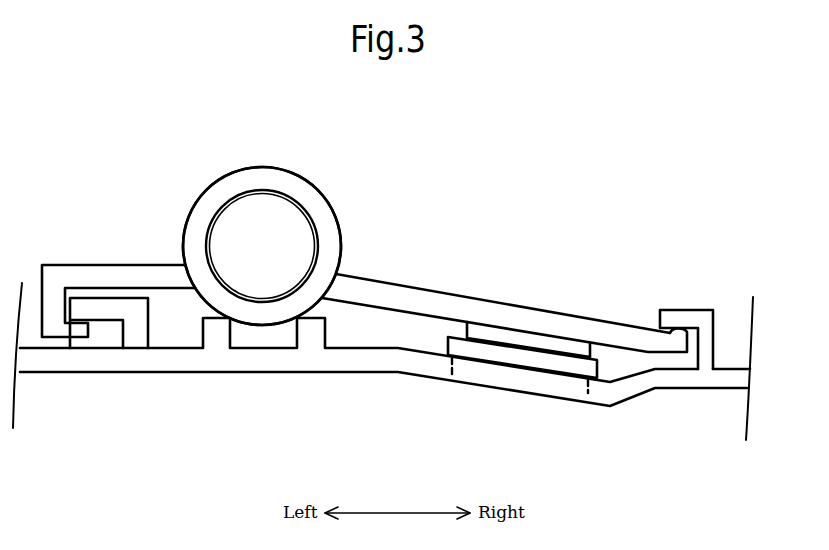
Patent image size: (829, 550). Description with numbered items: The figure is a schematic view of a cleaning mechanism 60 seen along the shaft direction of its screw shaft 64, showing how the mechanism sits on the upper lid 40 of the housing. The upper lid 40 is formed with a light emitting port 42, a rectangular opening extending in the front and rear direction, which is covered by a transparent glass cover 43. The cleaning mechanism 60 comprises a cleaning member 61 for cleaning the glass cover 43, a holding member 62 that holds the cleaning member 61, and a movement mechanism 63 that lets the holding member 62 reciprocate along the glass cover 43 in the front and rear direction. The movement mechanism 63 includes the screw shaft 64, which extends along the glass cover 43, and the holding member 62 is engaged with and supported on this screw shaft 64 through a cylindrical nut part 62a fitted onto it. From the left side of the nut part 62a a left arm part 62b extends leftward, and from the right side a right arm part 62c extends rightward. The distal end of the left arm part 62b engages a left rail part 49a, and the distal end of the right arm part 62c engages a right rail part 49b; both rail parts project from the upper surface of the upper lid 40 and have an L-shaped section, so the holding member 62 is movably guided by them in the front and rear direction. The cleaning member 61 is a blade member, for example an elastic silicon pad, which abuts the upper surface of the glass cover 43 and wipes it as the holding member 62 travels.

The cleaning mechanism 60 is at (128, 205).
The holding member 62 is at (342, 231).
The cylindrical nut part 62a is at (315, 185).
The left arm part 62b is at (95, 283).
The right arm part 62c is at (418, 296).
The movement mechanism 63 is at (252, 167).
The screw shaft 64 is at (252, 220).
The cleaning member 61 is at (520, 340).
The glass cover 43 is at (447, 347).
The light emitting port 42 is at (588, 388).
The upper lid 40 is at (177, 362).
The left rail part 49a is at (110, 322).
The right rail part 49b is at (698, 310).